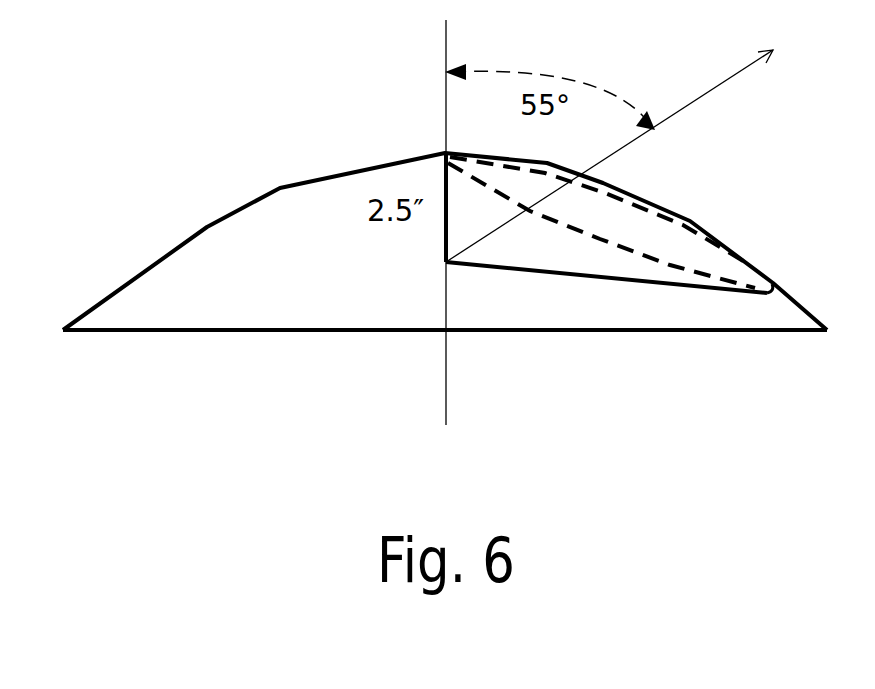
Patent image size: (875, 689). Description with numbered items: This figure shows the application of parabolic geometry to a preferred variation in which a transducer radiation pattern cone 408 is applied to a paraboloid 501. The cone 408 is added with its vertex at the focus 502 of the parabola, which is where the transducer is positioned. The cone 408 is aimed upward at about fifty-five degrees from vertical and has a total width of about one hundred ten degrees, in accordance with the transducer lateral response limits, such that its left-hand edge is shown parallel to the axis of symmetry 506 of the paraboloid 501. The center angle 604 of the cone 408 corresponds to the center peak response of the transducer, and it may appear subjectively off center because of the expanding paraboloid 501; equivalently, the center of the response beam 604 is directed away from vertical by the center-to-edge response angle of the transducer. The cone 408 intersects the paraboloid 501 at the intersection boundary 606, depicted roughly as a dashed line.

The paraboloid 501 is at (280, 188).
The focus 502 is at (446, 262).
The axis of symmetry 506 is at (446, 365).
The center angle of the cone 604 is at (688, 107).
The intersection boundary 606 is at (567, 230).
The cone 408 is at (613, 280).